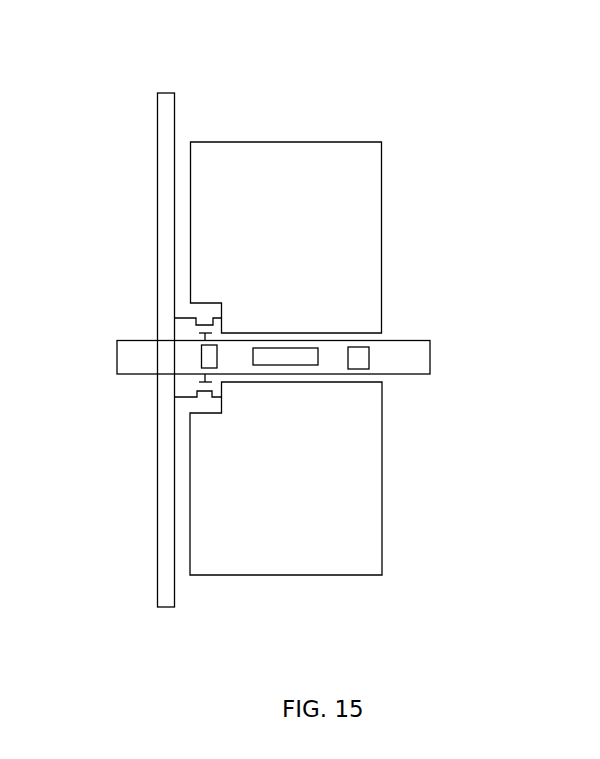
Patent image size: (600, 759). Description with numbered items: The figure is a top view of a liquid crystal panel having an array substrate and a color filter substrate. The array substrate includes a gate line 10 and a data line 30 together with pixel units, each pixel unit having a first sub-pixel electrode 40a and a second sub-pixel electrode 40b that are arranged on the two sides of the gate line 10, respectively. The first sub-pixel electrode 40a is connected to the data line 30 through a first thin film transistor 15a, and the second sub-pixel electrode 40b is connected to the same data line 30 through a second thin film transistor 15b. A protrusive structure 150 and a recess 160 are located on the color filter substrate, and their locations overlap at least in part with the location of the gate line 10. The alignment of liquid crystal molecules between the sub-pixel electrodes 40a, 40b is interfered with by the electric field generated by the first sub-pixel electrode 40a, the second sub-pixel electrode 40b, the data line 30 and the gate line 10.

The gate line 10 is at (128, 352).
The first thin film transistor 15a is at (195, 318).
The second thin film transistor 15b is at (197, 391).
The data line 30 is at (167, 92).
The first sub-pixel electrode 40a is at (372, 172).
The second sub-pixel electrode 40b is at (373, 520).
The protrusive structure 150 is at (305, 353).
The recess 160 is at (358, 357).